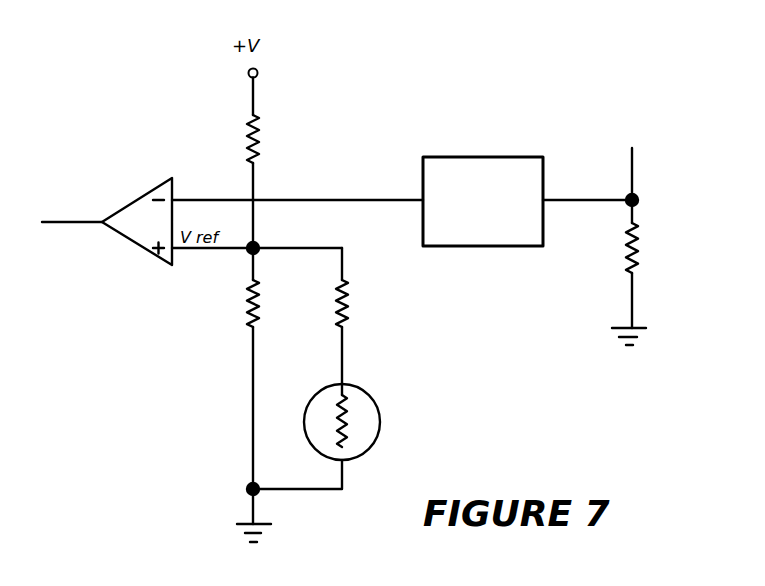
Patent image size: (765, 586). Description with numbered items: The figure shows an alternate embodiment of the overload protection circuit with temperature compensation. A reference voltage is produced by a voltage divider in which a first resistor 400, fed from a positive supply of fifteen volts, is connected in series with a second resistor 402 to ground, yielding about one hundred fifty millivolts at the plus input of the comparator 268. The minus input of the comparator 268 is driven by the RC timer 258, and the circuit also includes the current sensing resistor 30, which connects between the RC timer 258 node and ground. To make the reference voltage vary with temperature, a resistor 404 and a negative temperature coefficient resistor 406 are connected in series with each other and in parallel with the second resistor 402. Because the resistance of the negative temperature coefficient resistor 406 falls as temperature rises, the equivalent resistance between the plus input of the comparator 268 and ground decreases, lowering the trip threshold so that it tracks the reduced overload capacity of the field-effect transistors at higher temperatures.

The comparator 268 is at (141, 197).
The first resistor 400 is at (262, 131).
The second resistor 402 is at (248, 319).
The resistor 404 is at (347, 294).
The negative temperature coefficient resistor 406 is at (380, 418).
The RC timer 258 is at (483, 157).
The current sensing resistor 30 is at (634, 257).